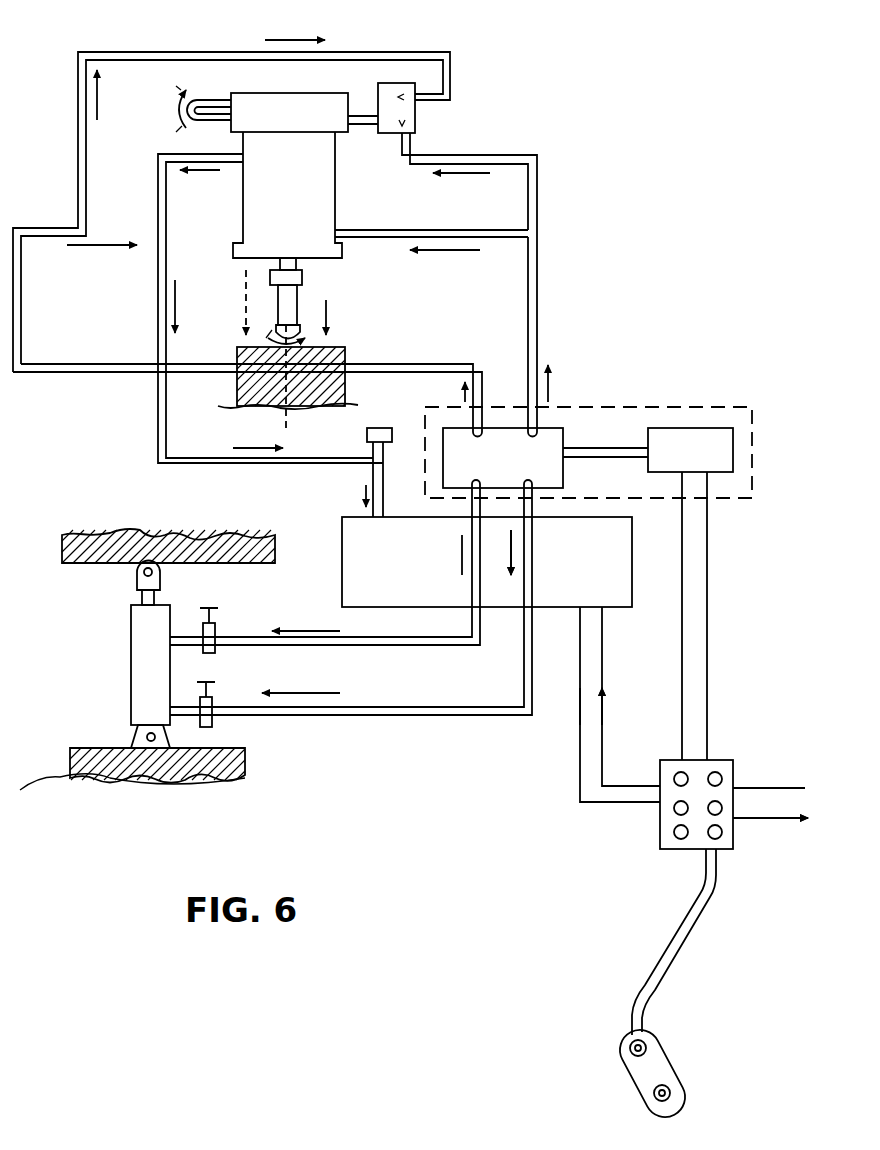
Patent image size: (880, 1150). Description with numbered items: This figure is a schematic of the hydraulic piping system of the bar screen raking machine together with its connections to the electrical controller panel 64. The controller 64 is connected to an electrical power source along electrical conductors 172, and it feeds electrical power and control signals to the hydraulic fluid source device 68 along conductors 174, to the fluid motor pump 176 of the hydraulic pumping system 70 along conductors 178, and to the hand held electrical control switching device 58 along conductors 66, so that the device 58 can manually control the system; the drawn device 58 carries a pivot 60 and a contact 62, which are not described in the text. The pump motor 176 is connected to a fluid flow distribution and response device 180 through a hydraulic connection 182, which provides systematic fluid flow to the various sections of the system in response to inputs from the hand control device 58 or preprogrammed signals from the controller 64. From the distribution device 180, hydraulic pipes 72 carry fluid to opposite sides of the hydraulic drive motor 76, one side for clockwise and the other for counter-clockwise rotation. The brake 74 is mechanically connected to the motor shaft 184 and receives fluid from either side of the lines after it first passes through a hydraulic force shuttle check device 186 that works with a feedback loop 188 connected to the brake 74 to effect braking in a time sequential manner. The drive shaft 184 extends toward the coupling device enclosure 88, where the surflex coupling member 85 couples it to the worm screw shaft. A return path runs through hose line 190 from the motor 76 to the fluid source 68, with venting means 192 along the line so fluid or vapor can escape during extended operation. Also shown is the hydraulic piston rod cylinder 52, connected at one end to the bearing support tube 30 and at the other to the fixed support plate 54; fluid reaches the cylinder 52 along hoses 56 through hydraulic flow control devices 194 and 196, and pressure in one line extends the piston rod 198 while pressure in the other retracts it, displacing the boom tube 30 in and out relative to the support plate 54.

The bearing support tube 30 is at (132, 526).
The hydraulic piston rod cylinder 52 is at (135, 666).
The support plate 54 is at (68, 746).
The hoses 56 is at (455, 707).
The hand held electrical control switching device 58 is at (638, 1083).
The pedal pivot 60 is at (645, 1045).
The pedal switch contact 62 is at (670, 1092).
The electrical controller panel 64 is at (668, 817).
The conductors 66 is at (686, 910).
The hydraulic fluid source device 68 is at (630, 562).
The hydraulic pumping system 70 is at (597, 408).
The pipes 72 is at (538, 328).
The brake 74 is at (305, 93).
The hydraulic drive motor 76 is at (310, 198).
The surflex coupling member 85 is at (270, 278).
The coupling device enclosure 88 is at (340, 362).
The electrical conductors 172 is at (786, 858).
The conductors 174 is at (572, 730).
The fluid motor pump 176 is at (712, 440).
The conductors 178 is at (718, 580).
The fluid flow distribution and response device 180 is at (548, 488).
The hydraulic connection 182 is at (620, 438).
The motor shaft 184 is at (296, 262).
The hydraulic force shuttle check device 186 is at (410, 118).
The feedback loop 188 is at (219, 90).
The hose line 190 is at (158, 343).
The venting means 192 is at (380, 436).
The hydraulic flow control device 194 is at (218, 632).
The hydraulic flow control device 196 is at (213, 703).
The piston rod 198 is at (140, 598).